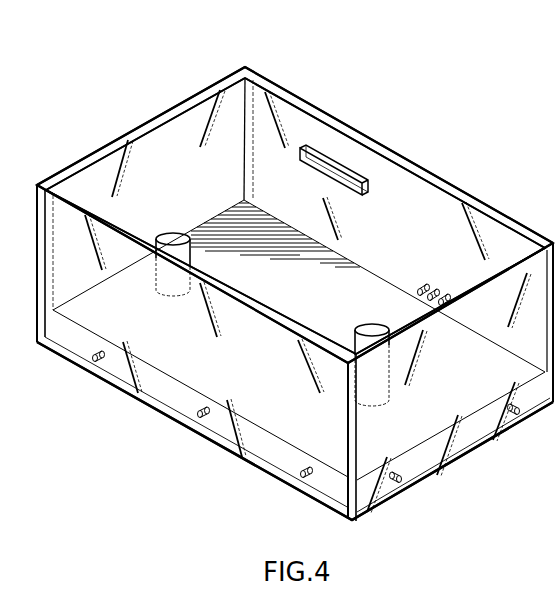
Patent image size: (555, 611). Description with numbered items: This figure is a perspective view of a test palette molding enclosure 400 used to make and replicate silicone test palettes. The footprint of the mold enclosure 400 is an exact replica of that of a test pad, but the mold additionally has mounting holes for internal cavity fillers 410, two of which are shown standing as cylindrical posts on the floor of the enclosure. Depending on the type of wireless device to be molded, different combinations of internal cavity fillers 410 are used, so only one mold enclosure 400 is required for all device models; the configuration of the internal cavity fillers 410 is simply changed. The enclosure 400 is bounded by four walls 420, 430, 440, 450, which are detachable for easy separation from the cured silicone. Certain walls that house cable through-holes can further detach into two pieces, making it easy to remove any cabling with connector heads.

The test palette molding enclosure 400 is at (328, 40).
The internal cavity filler 410 is at (172, 235).
The wall 420 is at (143, 152).
The wall 430 is at (182, 353).
The wall 440 is at (433, 415).
The wall 450 is at (448, 243).